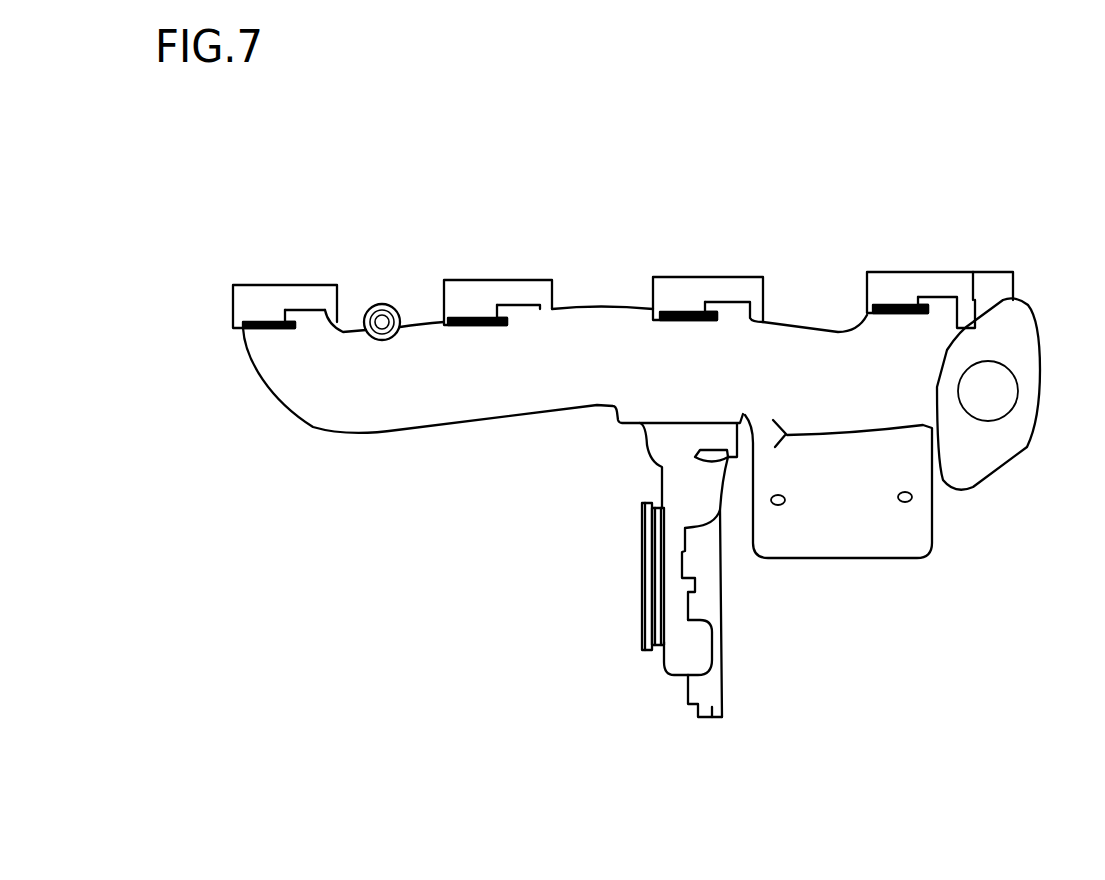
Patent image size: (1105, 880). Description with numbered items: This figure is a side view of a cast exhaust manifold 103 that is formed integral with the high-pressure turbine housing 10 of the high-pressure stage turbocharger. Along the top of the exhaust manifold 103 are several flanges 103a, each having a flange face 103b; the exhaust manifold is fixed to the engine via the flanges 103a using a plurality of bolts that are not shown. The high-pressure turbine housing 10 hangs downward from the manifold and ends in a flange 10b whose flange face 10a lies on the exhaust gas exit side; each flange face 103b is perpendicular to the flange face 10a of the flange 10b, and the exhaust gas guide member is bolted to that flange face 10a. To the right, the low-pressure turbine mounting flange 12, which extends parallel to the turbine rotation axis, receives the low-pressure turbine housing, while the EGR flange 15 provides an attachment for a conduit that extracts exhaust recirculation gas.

The exhaust manifold 103 is at (468, 408).
The flange of the exhaust manifold 103a is at (307, 300).
The flange face 103b is at (262, 285).
The high-pressure turbine housing 10 is at (685, 653).
The flange face 10a is at (727, 633).
The flange 10b is at (715, 720).
The low-pressure turbine mounting flange 12 is at (878, 532).
The EGR flange 15 is at (985, 438).